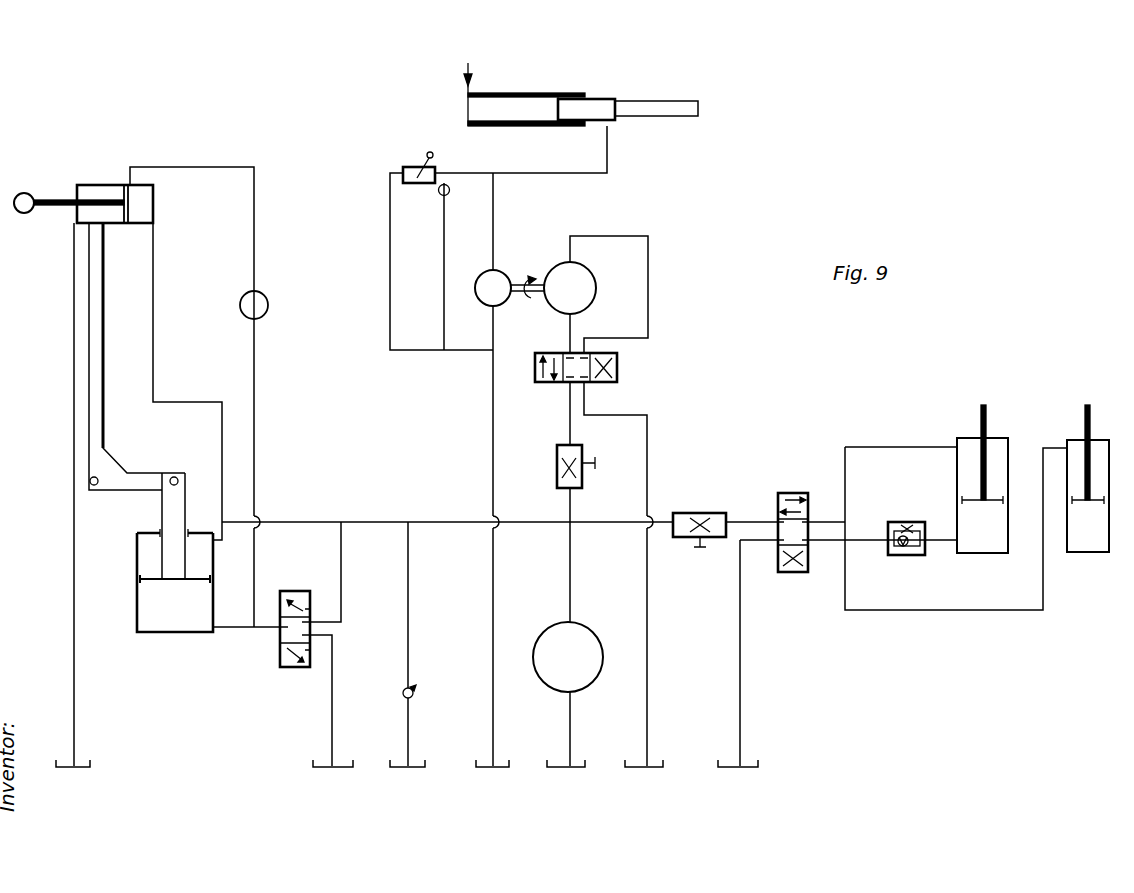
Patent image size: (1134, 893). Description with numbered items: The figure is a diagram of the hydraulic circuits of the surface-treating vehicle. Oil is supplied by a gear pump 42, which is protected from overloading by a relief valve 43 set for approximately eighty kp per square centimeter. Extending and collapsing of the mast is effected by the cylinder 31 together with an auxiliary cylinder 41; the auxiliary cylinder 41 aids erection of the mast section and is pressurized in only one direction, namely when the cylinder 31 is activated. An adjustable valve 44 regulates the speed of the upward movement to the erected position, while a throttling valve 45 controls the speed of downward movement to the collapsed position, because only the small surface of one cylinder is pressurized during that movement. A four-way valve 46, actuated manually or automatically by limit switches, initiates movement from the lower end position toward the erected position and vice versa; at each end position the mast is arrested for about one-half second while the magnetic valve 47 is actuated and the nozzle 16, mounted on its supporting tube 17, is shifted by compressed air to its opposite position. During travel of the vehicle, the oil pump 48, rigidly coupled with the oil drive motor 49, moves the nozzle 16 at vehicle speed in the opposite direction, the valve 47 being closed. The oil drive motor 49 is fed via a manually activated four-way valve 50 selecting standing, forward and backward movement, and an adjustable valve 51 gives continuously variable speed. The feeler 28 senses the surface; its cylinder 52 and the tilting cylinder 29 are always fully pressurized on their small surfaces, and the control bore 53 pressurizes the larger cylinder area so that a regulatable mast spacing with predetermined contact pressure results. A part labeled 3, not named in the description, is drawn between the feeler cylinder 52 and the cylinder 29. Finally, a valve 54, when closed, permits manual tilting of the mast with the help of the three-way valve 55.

The lever rod 3 is at (106, 322).
The high pressure ejection nozzle 16 is at (562, 93).
The supporting tube 17 is at (631, 99).
The feeler 28 is at (48, 198).
The hydraulic cylinder 29 is at (160, 634).
The cylinder 31 is at (995, 450).
The auxiliary cylinder 41 is at (1088, 545).
The gear pump 42 is at (590, 686).
The relief valve 43 is at (413, 698).
The adjustable valve 44 is at (683, 511).
The throttling valve 45 is at (900, 521).
The four-way valve 46 is at (795, 492).
The magnetic valve 47 is at (436, 167).
The oil pump 48 is at (498, 305).
The oil drive motor 49 is at (593, 300).
The manually activated four-way valve 50 is at (618, 367).
The adjustable valve 51 is at (556, 466).
The cylinder of the feeler 52 is at (150, 205).
The control bore 53 is at (127, 184).
The valve 54 is at (264, 313).
The three-way valve 55 is at (290, 669).